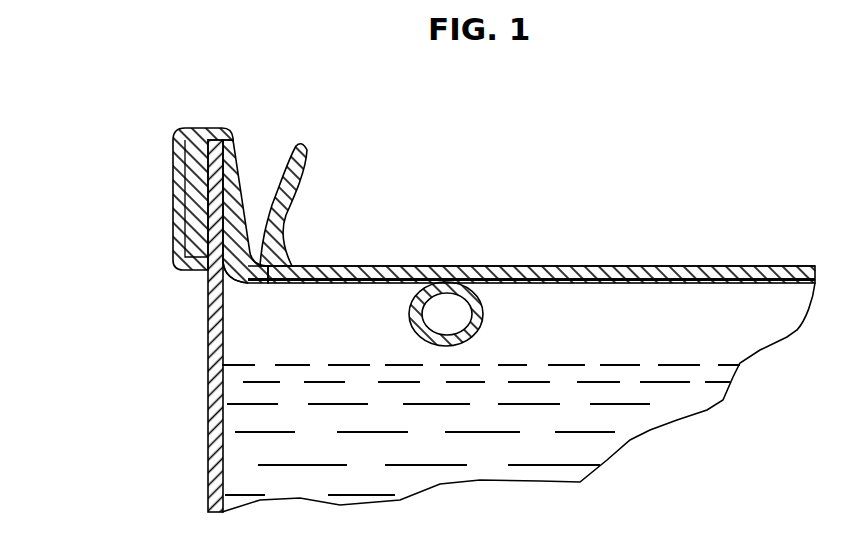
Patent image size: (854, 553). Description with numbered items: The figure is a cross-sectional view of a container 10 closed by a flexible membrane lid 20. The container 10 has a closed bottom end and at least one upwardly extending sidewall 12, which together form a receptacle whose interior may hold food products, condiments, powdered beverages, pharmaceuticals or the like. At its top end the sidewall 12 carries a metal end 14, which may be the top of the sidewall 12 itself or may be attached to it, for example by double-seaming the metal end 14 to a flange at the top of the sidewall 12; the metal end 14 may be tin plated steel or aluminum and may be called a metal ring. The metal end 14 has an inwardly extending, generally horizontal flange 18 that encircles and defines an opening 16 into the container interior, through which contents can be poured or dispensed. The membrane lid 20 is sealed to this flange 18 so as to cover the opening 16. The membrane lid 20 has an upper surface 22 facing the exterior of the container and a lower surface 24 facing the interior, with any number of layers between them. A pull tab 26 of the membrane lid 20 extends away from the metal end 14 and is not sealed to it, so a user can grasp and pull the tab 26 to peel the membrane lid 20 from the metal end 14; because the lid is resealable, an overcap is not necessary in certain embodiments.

The container 10 is at (210, 421).
The sidewall 12 is at (185, 193).
The metal end 14 is at (240, 168).
The opening 16 is at (512, 310).
The flange 18 is at (240, 249).
The membrane lid 20 is at (633, 265).
The upper surface 22 is at (580, 265).
The lower surface 24 is at (668, 283).
The pull tab 26 is at (303, 178).